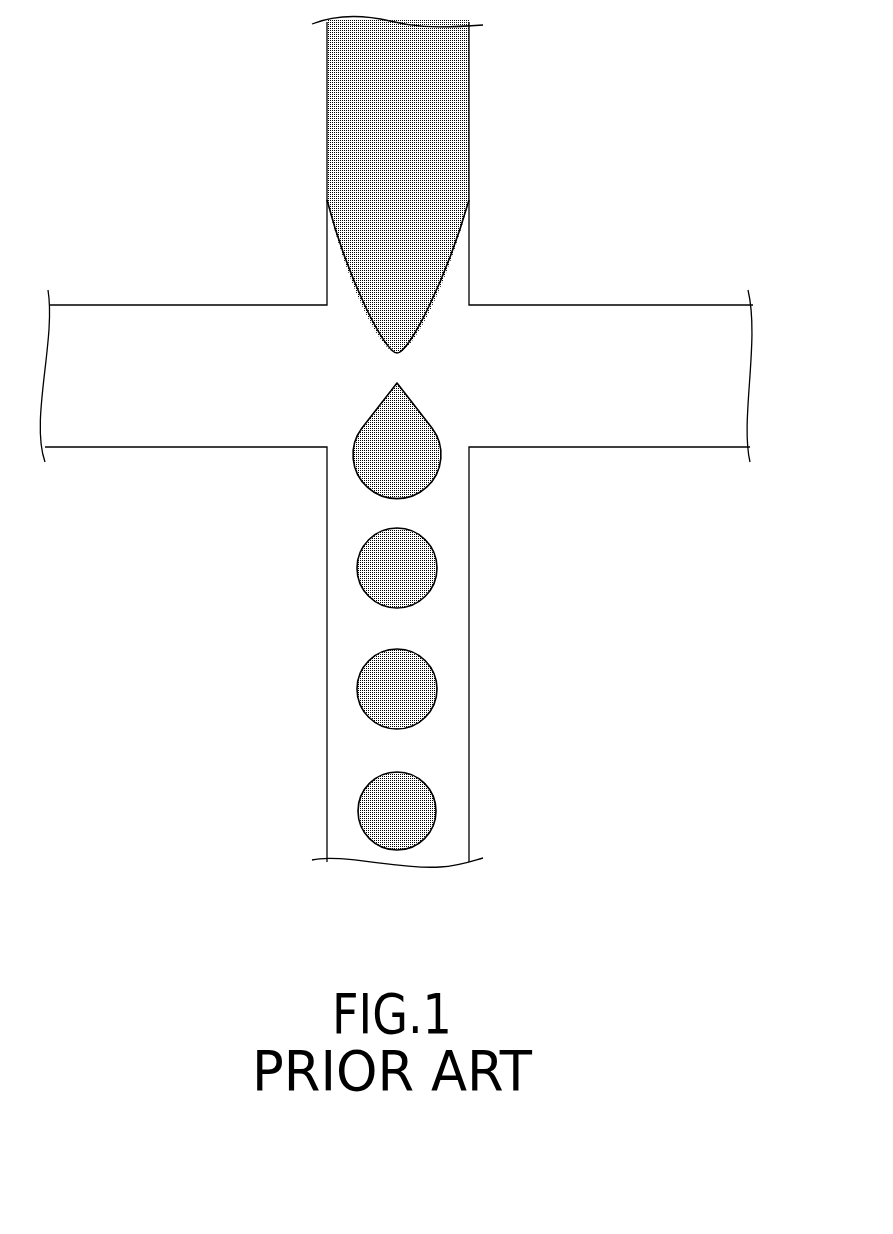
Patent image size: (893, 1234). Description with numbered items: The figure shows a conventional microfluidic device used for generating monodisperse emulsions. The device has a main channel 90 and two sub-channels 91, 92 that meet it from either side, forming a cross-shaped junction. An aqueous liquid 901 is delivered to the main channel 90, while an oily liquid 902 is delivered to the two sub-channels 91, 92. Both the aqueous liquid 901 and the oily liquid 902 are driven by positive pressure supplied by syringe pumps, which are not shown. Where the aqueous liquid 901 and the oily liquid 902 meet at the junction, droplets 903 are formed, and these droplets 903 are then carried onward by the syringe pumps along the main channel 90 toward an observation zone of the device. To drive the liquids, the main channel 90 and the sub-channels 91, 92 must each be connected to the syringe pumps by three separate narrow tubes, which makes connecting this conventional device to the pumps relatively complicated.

The main channel 90 is at (470, 132).
The aqueous liquid 901 is at (415, 190).
The sub-channel 91 is at (189, 304).
The sub-channel 92 is at (662, 305).
The oily liquid 902 is at (185, 412).
The droplets 903 is at (413, 805).